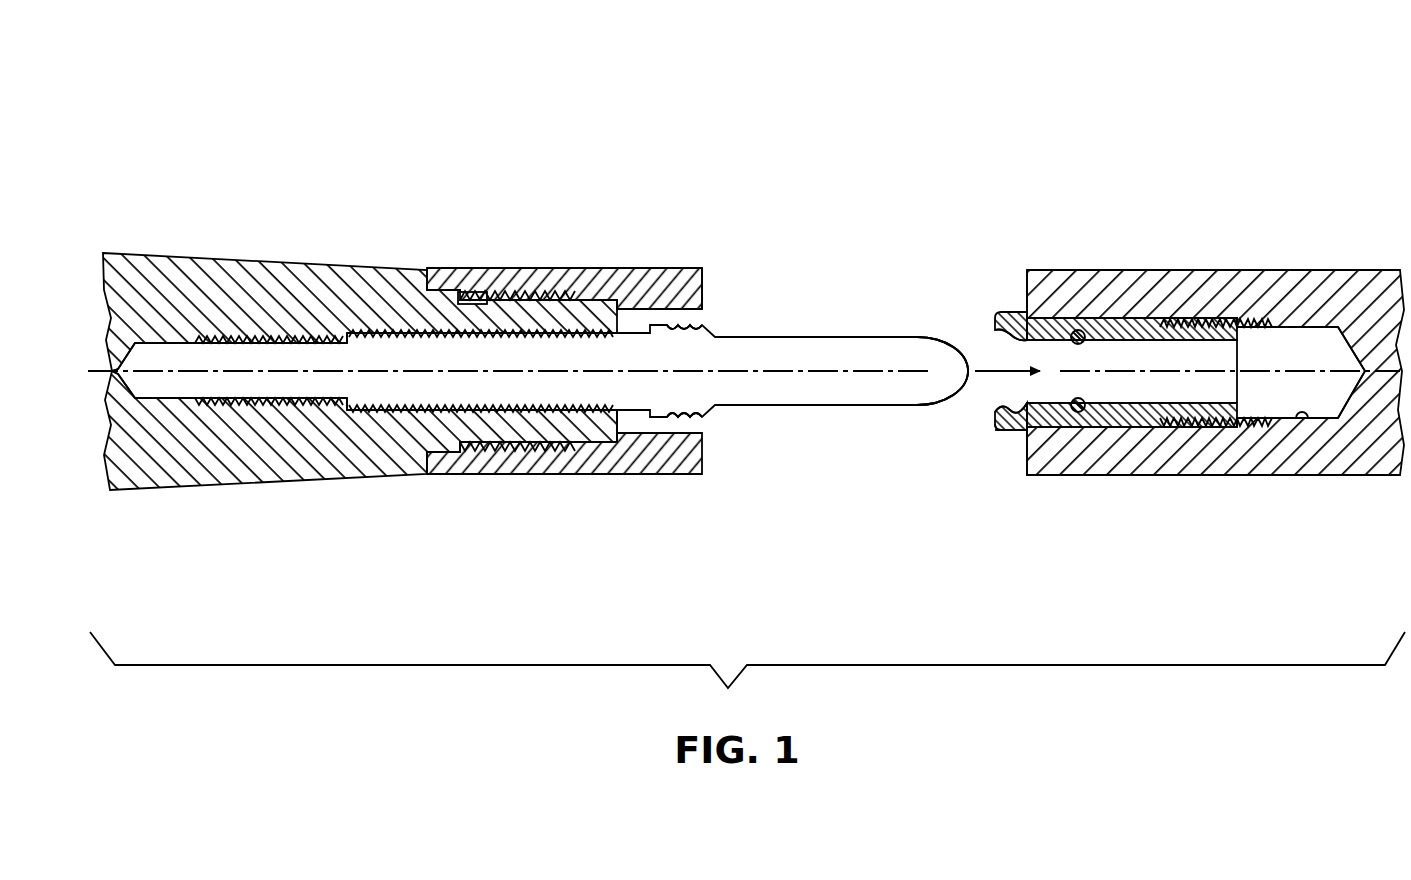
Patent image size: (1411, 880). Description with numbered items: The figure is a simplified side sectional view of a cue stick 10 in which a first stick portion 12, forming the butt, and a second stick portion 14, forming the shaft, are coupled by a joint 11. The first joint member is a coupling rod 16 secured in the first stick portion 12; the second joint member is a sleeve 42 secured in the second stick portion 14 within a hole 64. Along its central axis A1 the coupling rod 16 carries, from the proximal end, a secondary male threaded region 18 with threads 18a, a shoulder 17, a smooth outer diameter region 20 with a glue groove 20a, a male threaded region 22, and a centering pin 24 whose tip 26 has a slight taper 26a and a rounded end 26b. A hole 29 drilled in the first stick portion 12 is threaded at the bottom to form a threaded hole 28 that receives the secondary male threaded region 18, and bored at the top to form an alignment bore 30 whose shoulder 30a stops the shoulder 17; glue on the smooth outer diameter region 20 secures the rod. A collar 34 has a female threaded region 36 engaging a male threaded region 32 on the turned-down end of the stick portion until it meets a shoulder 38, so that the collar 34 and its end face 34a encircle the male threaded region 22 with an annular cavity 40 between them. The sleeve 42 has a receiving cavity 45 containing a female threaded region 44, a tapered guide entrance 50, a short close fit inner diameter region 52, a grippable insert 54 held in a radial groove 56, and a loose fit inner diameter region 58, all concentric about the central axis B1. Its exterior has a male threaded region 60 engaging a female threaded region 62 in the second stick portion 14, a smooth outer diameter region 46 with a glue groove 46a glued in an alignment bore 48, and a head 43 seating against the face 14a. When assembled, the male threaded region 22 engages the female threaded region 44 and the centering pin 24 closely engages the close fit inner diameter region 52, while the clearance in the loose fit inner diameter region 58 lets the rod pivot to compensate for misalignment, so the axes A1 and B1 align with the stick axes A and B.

The cue stick 10 is at (300, 158).
The joint 11 is at (856, 160).
The first stick portion 12 is at (206, 258).
The second stick portion 14 is at (1246, 270).
The face of stick portion 14a is at (1022, 277).
The coupling rod 16 is at (815, 353).
The shoulder 17 is at (345, 338).
The secondary male threaded region 18 is at (293, 380).
The threads 18a is at (258, 402).
The smooth outer diameter region 20 is at (578, 388).
The glue groove 20a is at (465, 408).
The male threaded region 22 is at (708, 418).
The centering pin 24 is at (828, 408).
The tip 26 is at (962, 343).
The slight taper 26a is at (918, 340).
The rounded end 26b is at (962, 402).
The threaded hole 28 is at (222, 395).
The hole 29 is at (170, 395).
The alignment bore 30 is at (372, 446).
The shoulder of alignment bore 30a is at (392, 410).
The male threaded region 32 is at (506, 292).
The collar 34 is at (465, 268).
The nut end face 34a is at (705, 292).
The female threaded region 36 is at (555, 298).
The shoulder 38 is at (390, 268).
The annular cavity 40 is at (708, 317).
The sleeve 42 is at (999, 432).
The head 43 is at (1010, 432).
The female threaded region 44 is at (992, 404).
The receiving cavity 45 is at (1022, 352).
The smooth outer diameter region 46 is at (1148, 318).
The glue groove 46a is at (1100, 306).
The alignment bore 48 is at (1080, 330).
The tapered guide entrance 50 is at (1056, 403).
The close fit inner diameter region 52 is at (1070, 402).
The grippable insert 54 is at (1081, 412).
The radial groove 56 is at (1077, 412).
The loose fit inner diameter region 58 is at (1175, 405).
The male threaded region 60 is at (1203, 418).
The female threaded region 62 is at (1262, 407).
The hole 64 is at (1310, 420).
The central axis of stick portion A is at (112, 373).
The central axis of coupling rod A1 is at (735, 371).
The central axis of stick portion B is at (1260, 372).
The central axis of sleeve B1 is at (1107, 370).